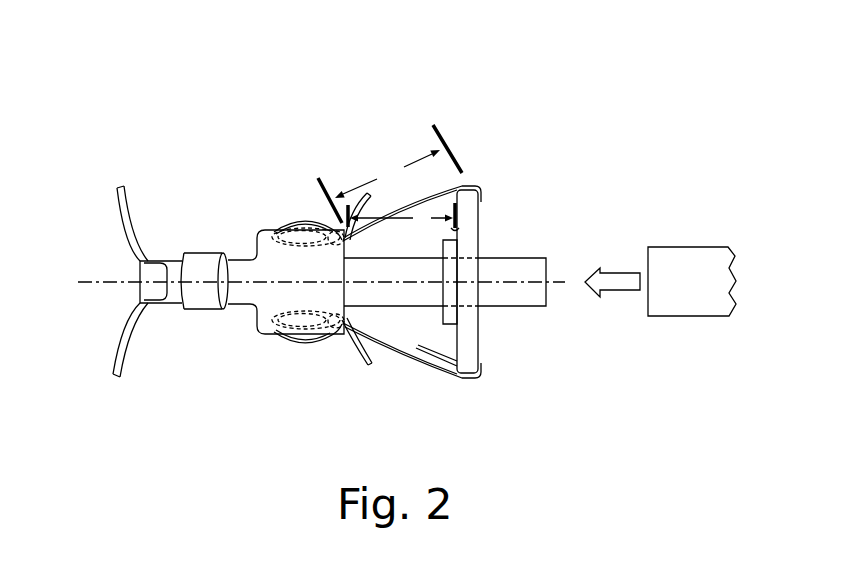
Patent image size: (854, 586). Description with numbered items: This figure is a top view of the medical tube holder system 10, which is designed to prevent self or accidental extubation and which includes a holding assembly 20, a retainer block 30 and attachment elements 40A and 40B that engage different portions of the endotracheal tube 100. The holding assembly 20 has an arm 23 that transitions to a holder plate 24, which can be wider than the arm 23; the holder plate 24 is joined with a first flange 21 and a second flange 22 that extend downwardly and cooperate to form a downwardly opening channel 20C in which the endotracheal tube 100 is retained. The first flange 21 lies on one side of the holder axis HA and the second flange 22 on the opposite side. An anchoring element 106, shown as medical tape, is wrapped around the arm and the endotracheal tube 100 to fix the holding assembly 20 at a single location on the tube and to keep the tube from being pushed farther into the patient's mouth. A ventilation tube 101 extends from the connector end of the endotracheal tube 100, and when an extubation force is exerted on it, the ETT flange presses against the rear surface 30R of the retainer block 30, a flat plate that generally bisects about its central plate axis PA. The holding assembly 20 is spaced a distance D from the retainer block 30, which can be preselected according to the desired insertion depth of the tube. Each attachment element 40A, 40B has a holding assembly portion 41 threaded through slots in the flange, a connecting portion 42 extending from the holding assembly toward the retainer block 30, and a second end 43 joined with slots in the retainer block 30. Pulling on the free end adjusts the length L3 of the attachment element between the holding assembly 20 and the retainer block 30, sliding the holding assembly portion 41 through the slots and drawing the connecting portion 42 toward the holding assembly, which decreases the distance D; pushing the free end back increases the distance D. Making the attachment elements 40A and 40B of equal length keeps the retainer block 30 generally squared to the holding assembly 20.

The medical tube holder system 10 is at (508, 76).
The holding assembly 20 is at (210, 216).
The channel 20C is at (317, 265).
The first flange 21 is at (262, 333).
The second flange 22 is at (268, 230).
The arm 23 is at (149, 266).
The holder plate 24 is at (265, 310).
The retainer block 30 is at (472, 246).
The rear surface 30R is at (455, 226).
The attachment element 40A is at (410, 357).
The attachment element 40B is at (401, 210).
The holding assembly portion 41 is at (317, 334).
The connecting portion 42 is at (382, 343).
The second end 43 is at (285, 326).
The endotracheal tube 100 is at (165, 305).
The ventilation tube 101 is at (683, 318).
The anchoring element 106 is at (197, 296).
The holder axis HA is at (306, 282).
The central plate axis PA is at (557, 281).
The distance D is at (401, 216).
The length L3 is at (390, 174).